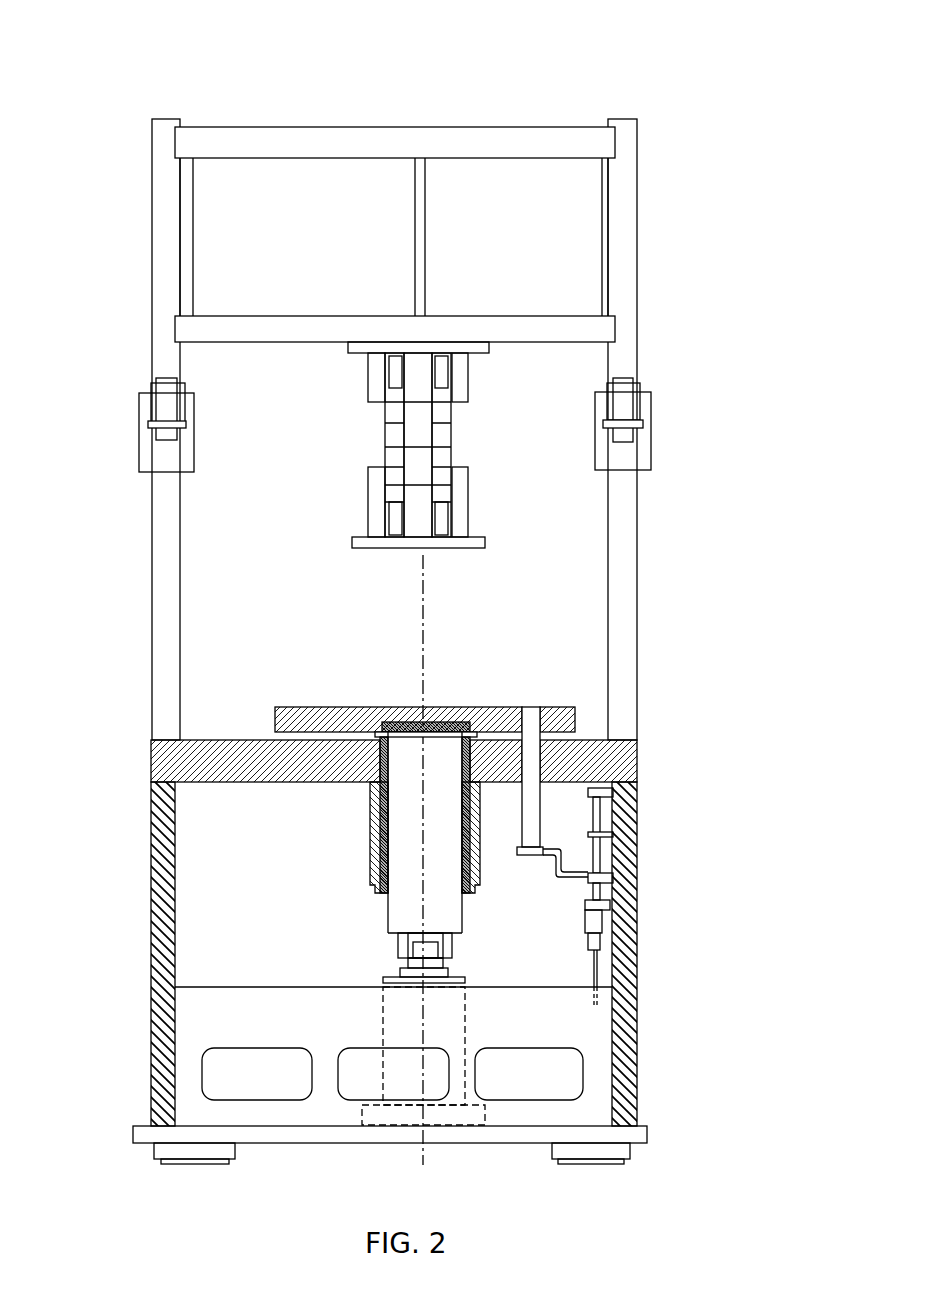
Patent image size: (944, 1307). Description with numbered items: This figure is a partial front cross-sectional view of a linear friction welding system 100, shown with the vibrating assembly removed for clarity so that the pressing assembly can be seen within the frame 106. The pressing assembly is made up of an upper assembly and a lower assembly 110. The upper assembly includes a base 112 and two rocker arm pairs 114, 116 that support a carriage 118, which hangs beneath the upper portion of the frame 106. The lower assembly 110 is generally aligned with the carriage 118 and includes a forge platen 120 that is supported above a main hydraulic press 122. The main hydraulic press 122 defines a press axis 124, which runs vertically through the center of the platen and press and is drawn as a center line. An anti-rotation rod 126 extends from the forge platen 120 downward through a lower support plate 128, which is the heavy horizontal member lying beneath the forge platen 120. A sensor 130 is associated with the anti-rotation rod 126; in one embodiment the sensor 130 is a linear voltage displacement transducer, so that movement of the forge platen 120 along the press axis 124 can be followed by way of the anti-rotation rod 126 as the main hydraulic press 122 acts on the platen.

The linear friction welding system 100 is at (75, 108).
The frame 106 is at (637, 175).
The lower assembly 110 is at (676, 967).
The base 112 is at (210, 345).
The rocker arm pair 114 is at (449, 437).
The rocker arm pair 116 is at (388, 428).
The carriage 118 is at (352, 540).
The forge platen 120 is at (322, 707).
The main hydraulic press 122 is at (405, 968).
The press axis 124 is at (423, 650).
The anti-rotation rod 126 is at (537, 792).
The lower support plate 128 is at (593, 735).
The sensor 130 is at (613, 855).